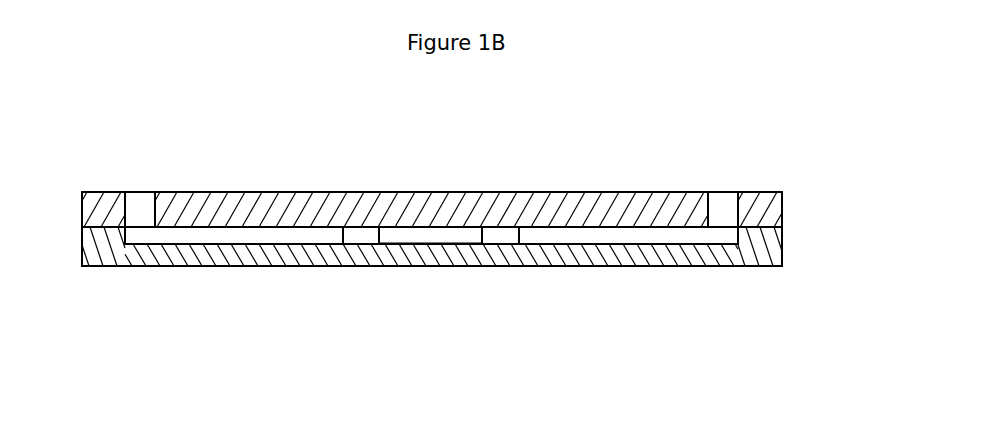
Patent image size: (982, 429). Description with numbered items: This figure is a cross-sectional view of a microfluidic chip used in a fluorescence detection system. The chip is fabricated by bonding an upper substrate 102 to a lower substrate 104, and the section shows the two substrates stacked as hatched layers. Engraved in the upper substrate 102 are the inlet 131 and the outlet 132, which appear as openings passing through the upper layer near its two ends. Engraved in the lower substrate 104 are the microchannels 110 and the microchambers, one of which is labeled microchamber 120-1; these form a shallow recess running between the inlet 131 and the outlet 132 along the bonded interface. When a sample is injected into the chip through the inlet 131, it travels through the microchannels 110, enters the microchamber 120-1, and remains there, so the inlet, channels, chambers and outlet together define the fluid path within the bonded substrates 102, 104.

The upper substrate 102 is at (763, 210).
The lower substrate 104 is at (768, 252).
The microchannel 110 is at (642, 235).
The microchamber 120-1 is at (422, 237).
The inlet 131 is at (722, 200).
The outlet 132 is at (142, 202).